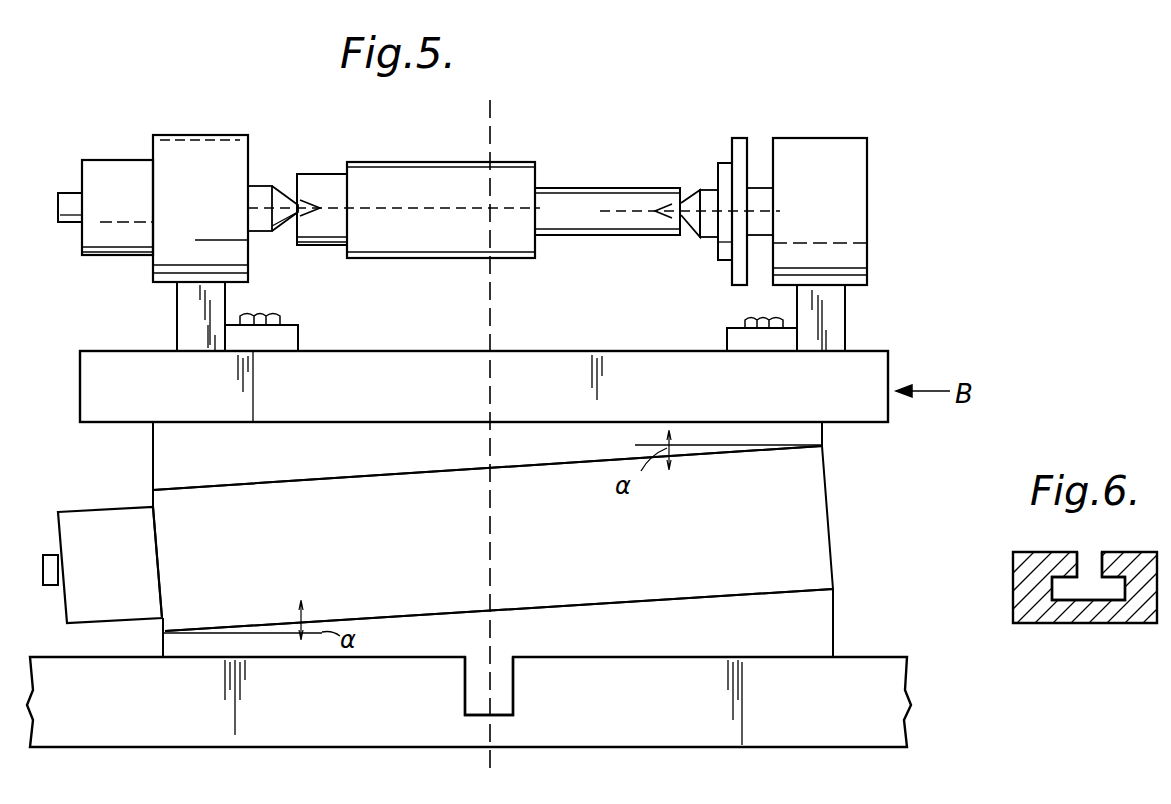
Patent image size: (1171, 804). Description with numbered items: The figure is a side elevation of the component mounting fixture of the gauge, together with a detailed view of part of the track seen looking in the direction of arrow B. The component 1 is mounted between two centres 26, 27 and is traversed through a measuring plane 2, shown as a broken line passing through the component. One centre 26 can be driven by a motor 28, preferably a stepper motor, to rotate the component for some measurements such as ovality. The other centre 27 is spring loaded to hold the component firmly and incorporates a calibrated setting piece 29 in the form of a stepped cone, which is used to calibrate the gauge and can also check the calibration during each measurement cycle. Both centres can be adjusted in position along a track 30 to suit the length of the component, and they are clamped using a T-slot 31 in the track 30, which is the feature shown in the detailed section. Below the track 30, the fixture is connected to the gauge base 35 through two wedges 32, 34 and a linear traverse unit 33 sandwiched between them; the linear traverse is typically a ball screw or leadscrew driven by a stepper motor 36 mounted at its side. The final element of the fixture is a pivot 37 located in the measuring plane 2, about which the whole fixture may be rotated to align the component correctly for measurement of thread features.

In FIG. 5, the component 1 is at (421, 180).
In FIG. 5, the measuring plane 2 is at (492, 106).
In FIG. 5, the centre 26 is at (196, 155).
In FIG. 5, the centre 27 is at (823, 158).
In FIG. 5, the motor 28 is at (101, 175).
In FIG. 5, the calibrated setting piece 29 is at (748, 122).
In FIG. 5, the track 30 is at (451, 362).
In FIG. 6, the track 30 is at (1148, 608).
In FIG. 6, the T-slot 31 is at (1088, 560).
In FIG. 5, the wedge 32 is at (300, 465).
In FIG. 5, the linear traverse unit 33 is at (447, 565).
In FIG. 5, the wedge 34 is at (697, 650).
In FIG. 5, the gauge base 35 is at (619, 727).
In FIG. 5, the stepper motor 36 is at (130, 585).
In FIG. 5, the pivot 37 is at (497, 688).